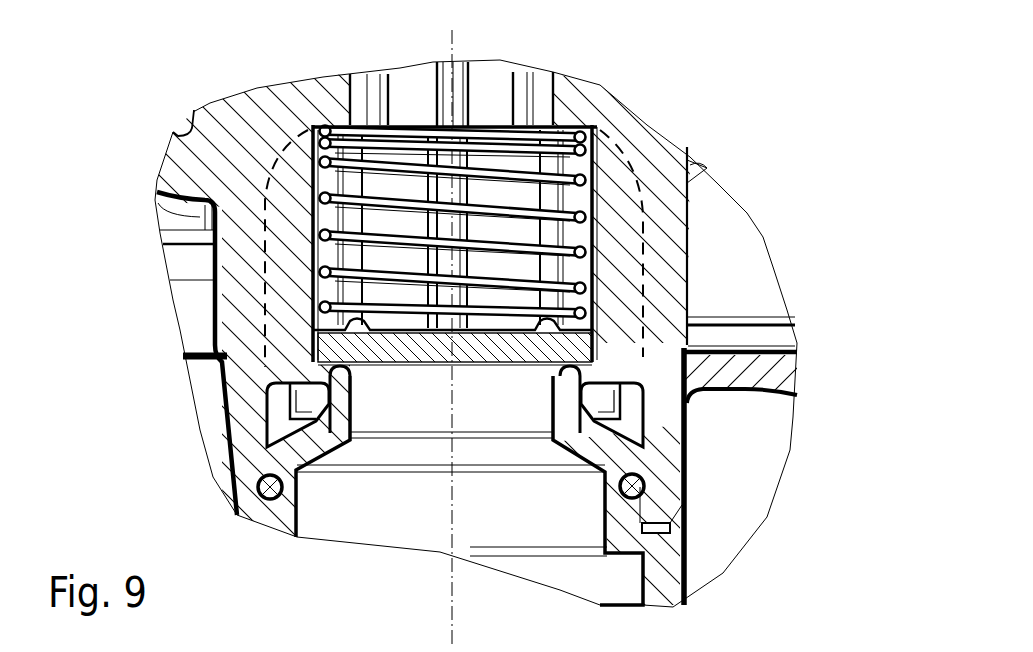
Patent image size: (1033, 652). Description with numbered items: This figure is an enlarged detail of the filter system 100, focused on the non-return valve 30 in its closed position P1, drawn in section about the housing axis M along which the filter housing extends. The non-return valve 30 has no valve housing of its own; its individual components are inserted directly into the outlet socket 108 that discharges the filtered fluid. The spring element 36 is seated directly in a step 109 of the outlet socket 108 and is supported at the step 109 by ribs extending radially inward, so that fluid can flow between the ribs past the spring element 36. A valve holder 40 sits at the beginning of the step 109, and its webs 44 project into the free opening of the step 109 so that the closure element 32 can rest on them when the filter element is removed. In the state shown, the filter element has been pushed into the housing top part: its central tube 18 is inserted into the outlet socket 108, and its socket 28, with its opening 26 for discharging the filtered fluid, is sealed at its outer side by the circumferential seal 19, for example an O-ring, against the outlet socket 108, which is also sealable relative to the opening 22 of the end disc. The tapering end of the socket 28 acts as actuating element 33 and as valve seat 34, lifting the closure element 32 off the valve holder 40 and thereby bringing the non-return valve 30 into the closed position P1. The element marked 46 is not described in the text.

The filter system 100 is at (714, 110).
The outlet socket 108 is at (687, 220).
The step 109 is at (597, 143).
The opening 22 is at (553, 72).
The non-return valve 30 is at (507, 127).
The spring element 36 is at (320, 236).
The valve seat 34 is at (593, 363).
The closure element 32 is at (523, 350).
The opening 26 is at (522, 506).
The socket 28 is at (263, 404).
The webs 44 is at (347, 381).
The valve holder 40 is at (647, 440).
The retaining flange 46 is at (318, 337).
The actuating element 33 is at (215, 404).
The circumferential seal 19 is at (668, 497).
The central tube 18 is at (680, 597).
The closed position P1 is at (144, 120).
The housing axis M is at (431, 328).